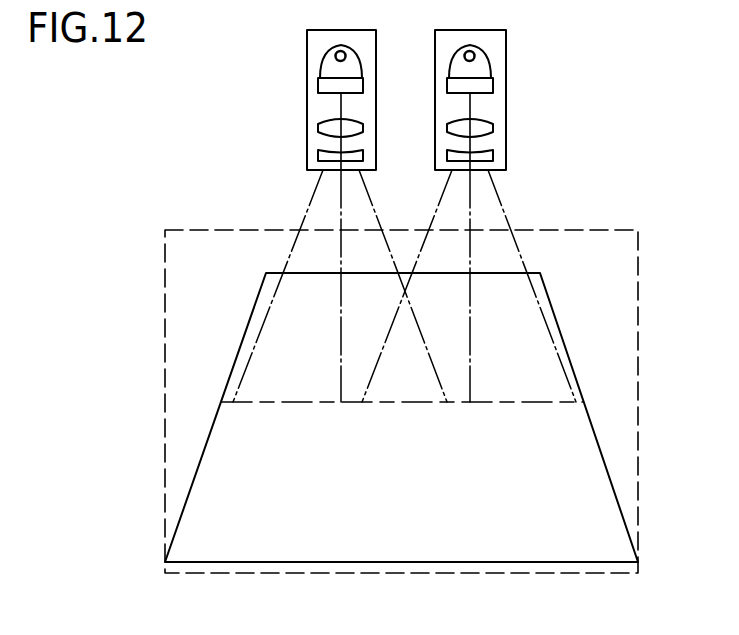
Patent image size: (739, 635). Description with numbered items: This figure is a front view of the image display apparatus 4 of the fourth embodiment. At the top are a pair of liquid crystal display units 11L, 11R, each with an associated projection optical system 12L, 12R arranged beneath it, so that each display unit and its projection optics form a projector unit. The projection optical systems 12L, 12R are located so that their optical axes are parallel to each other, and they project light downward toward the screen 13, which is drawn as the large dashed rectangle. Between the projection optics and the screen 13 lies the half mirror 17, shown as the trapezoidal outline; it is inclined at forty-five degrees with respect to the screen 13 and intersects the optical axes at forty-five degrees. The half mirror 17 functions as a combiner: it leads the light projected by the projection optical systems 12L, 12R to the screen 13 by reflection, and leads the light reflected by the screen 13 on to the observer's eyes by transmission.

The liquid crystal display unit 11R is at (318, 79).
The projection optical system 12R is at (316, 141).
The liquid crystal display unit 11L is at (493, 76).
The projection optical system 12L is at (498, 140).
The screen 13 is at (165, 438).
The half mirror 17 is at (585, 433).
The image display apparatus 4 is at (528, 624).